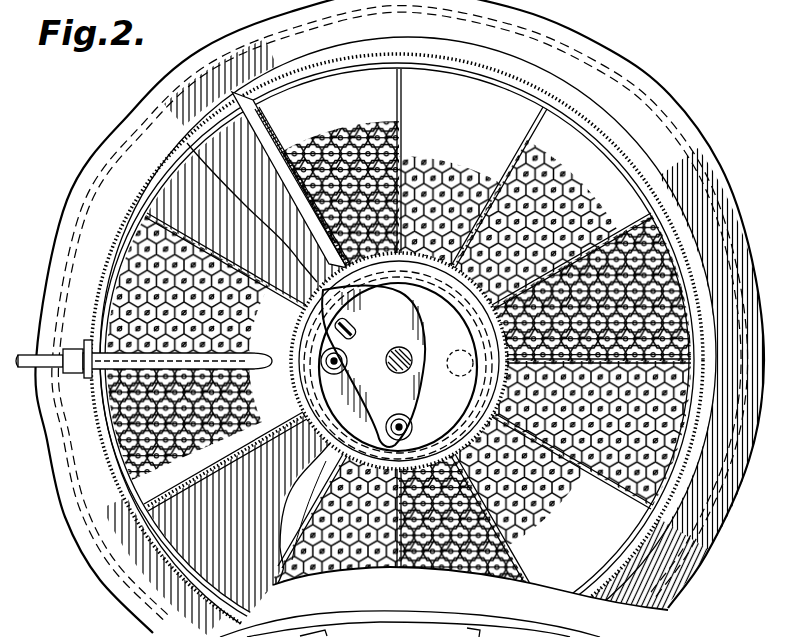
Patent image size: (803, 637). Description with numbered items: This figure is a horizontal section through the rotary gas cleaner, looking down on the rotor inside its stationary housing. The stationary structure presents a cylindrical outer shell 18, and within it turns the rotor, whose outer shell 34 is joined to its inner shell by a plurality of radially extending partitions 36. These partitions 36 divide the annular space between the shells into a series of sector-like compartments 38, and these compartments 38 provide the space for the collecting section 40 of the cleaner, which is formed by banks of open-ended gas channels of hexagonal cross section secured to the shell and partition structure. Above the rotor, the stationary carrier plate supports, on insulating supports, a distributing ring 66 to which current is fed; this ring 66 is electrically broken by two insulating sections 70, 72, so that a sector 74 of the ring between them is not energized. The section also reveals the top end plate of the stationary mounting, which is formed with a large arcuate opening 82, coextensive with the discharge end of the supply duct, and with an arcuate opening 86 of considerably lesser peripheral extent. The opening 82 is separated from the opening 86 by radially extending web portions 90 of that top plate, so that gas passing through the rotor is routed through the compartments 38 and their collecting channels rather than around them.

The cylindrical outer shell 18 is at (672, 135).
The outer shell 34 is at (600, 148).
The radially extending partitions 36 is at (229, 452).
The sector-like compartments 38 is at (470, 116).
The collecting section 40 is at (580, 307).
The distributing ring 66 is at (432, 352).
The insulating section 70 is at (398, 367).
The insulating section 72 is at (348, 334).
The sector 74 is at (307, 327).
The arcuate opening 82 is at (282, 143).
The arcuate opening 86 is at (150, 480).
The web portions 90 is at (183, 180).